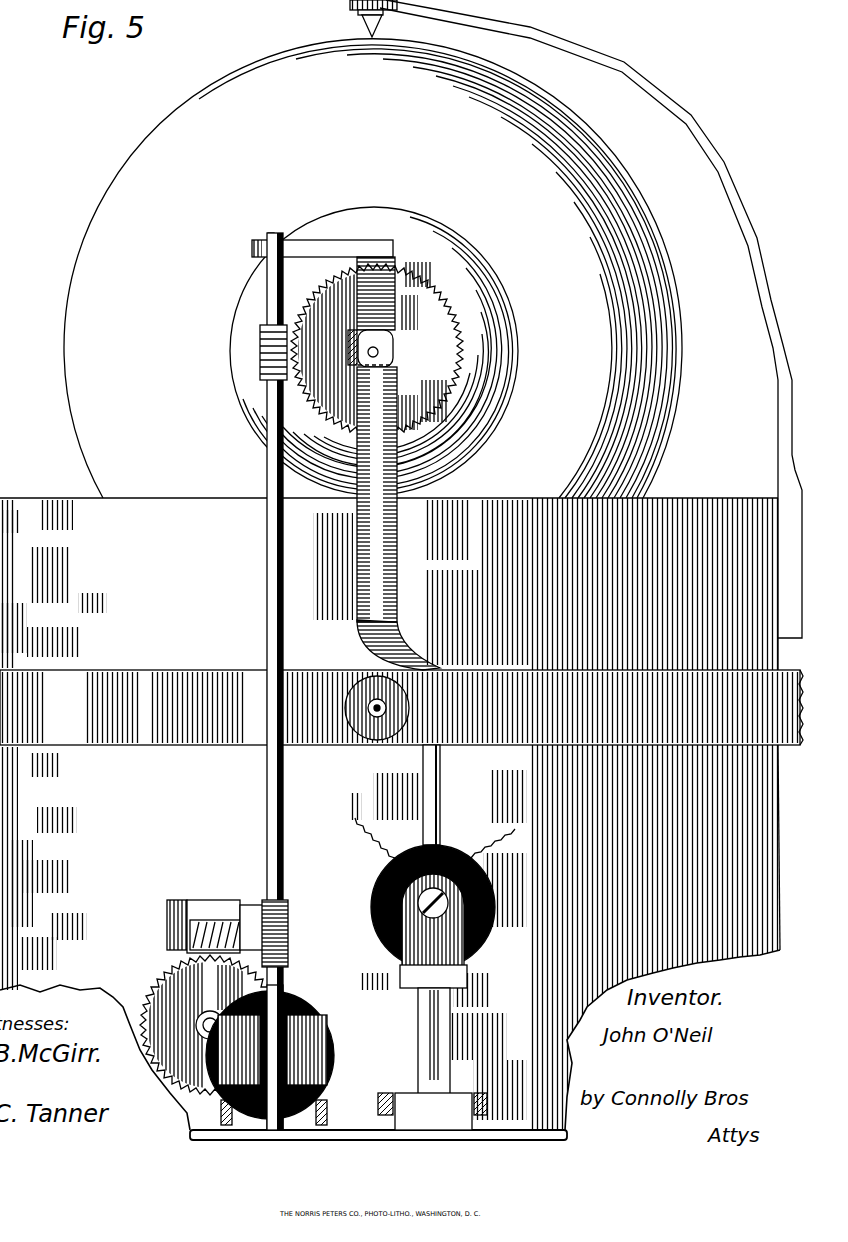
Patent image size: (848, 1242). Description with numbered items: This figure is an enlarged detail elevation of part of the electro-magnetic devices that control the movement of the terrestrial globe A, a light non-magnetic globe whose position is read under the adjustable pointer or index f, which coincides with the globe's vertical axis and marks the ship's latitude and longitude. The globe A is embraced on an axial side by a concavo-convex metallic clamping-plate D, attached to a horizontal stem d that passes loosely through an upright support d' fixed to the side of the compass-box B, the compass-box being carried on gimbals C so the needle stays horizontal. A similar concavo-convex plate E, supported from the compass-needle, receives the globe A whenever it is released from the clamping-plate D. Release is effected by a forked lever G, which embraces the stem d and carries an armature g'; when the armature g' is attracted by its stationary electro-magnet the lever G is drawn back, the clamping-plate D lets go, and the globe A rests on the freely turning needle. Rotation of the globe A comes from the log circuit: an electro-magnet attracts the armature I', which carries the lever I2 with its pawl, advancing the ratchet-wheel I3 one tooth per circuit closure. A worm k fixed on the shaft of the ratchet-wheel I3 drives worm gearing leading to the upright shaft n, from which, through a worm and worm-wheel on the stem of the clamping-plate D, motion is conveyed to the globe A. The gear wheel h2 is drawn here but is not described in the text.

The terrestrial globe A is at (373, 268).
The clamping-plate D is at (374, 351).
The concavo-convex plate E is at (591, 319).
The pointer or index f is at (373, 18).
The compass-box B is at (390, 819).
The gimbals C is at (401, 707).
The gear wheel h2 is at (377, 349).
The stem d is at (336, 300).
The upright support d' is at (398, 518).
The upright shaft n is at (262, 376).
The armature rod g is at (450, 795).
The forked lever G is at (466, 935).
The armature g' is at (377, 954).
The worm k is at (183, 950).
The armature I' is at (284, 1057).
The ratchet-wheel I3 is at (283, 917).
The lever I2 is at (283, 972).